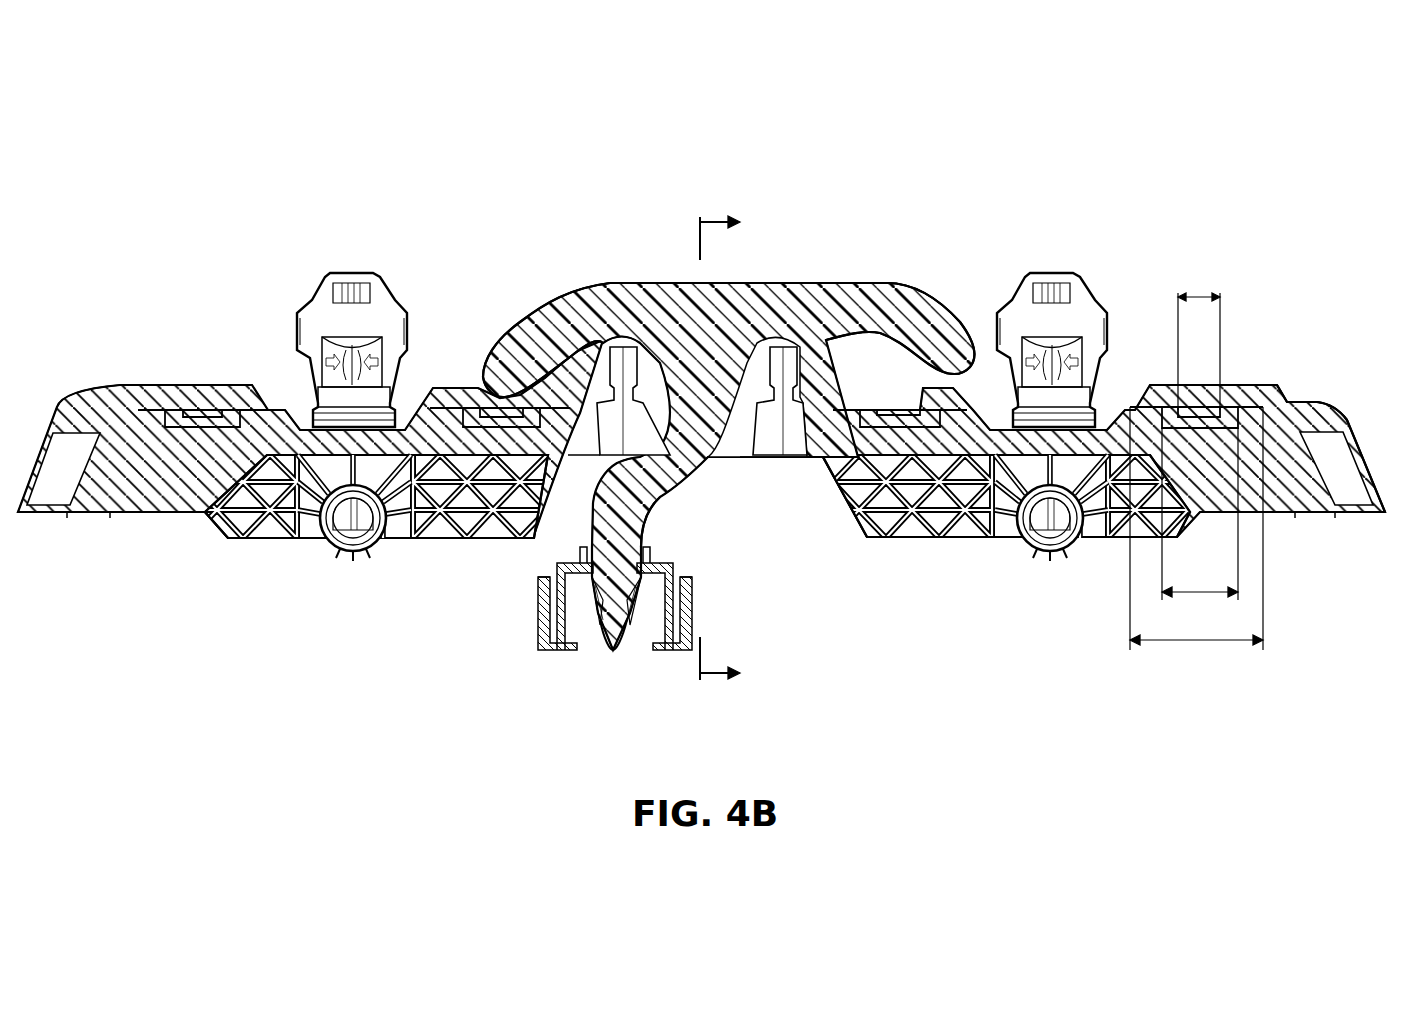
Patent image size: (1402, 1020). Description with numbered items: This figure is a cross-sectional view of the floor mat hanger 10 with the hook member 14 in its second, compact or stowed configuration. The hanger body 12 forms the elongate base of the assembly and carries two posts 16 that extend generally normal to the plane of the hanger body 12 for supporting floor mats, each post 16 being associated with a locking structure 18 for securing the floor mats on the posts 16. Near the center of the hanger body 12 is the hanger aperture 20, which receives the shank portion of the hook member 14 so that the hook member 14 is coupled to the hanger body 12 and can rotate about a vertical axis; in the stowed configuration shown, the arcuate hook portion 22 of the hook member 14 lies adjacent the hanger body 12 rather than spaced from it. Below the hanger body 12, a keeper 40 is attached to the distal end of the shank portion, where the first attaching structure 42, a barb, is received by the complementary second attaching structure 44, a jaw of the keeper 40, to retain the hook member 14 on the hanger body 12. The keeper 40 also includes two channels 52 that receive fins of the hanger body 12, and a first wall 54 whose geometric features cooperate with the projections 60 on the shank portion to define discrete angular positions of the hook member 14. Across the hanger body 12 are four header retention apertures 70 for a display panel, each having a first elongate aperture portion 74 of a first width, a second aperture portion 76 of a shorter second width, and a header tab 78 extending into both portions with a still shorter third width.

The floor mat hanger 10 is at (186, 106).
The hanger body 12 is at (122, 383).
The hook member 14 is at (606, 283).
The post 16 is at (346, 550).
The locking structure 18 is at (318, 292).
The hanger aperture 20 is at (756, 356).
The arcuate hook portion 22 is at (532, 320).
The keeper 40 is at (534, 636).
The first attaching structure 42 is at (613, 650).
The second attaching structure 44 is at (597, 608).
The channel 52 is at (550, 583).
The first wall 54 is at (652, 556).
The projection 60 is at (648, 540).
The header retention aperture 70 is at (172, 409).
The first elongate aperture portion 74 is at (1257, 407).
The second aperture portion 76 is at (194, 425).
The header tab 78 is at (204, 405).